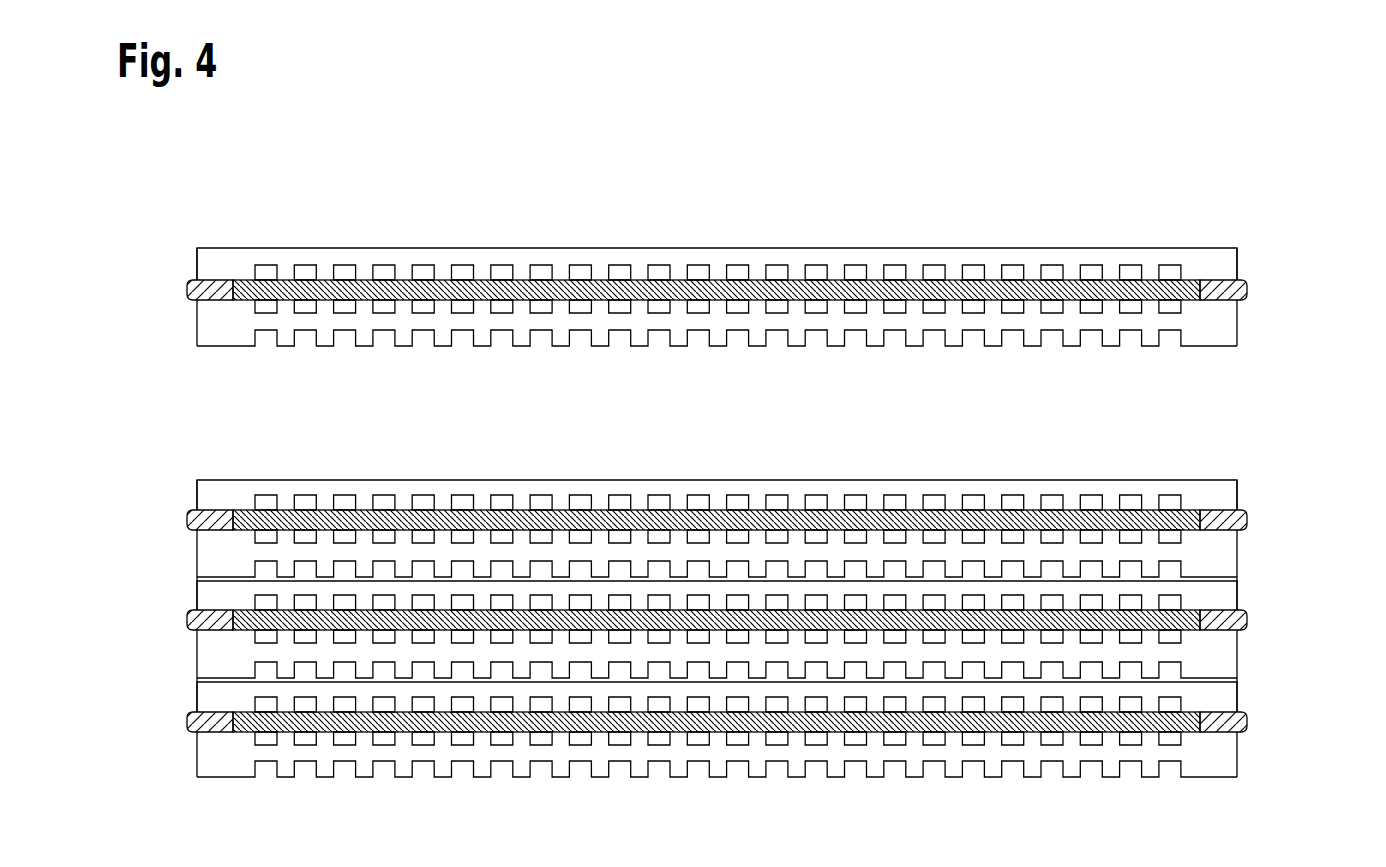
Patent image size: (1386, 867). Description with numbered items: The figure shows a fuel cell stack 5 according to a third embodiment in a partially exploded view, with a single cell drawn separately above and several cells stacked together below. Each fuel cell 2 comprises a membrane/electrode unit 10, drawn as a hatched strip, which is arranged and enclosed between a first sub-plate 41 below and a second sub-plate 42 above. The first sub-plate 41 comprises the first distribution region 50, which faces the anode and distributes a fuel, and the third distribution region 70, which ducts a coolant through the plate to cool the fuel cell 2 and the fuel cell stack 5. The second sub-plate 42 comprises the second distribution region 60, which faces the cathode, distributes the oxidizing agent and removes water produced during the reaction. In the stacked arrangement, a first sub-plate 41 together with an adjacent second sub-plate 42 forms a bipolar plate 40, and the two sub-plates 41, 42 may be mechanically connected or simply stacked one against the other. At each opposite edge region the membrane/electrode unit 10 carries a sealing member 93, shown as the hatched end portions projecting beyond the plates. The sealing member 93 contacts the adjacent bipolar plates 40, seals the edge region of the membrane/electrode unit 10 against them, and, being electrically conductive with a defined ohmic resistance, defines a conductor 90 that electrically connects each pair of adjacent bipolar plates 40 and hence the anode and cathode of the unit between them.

The fuel cell 2 is at (769, 738).
The fuel cell stack 5 is at (717, 214).
The membrane/electrode unit 10 is at (716, 457).
The bipolar plate 40 is at (756, 596).
The first sub-plate 41 is at (756, 538).
The second sub-plate 42 is at (756, 443).
The first distribution region 50 is at (785, 522).
The second distribution region 60 is at (785, 443).
The third distribution region 70 is at (756, 553).
The conductor 90 is at (770, 457).
The sealing member 93 is at (770, 457).